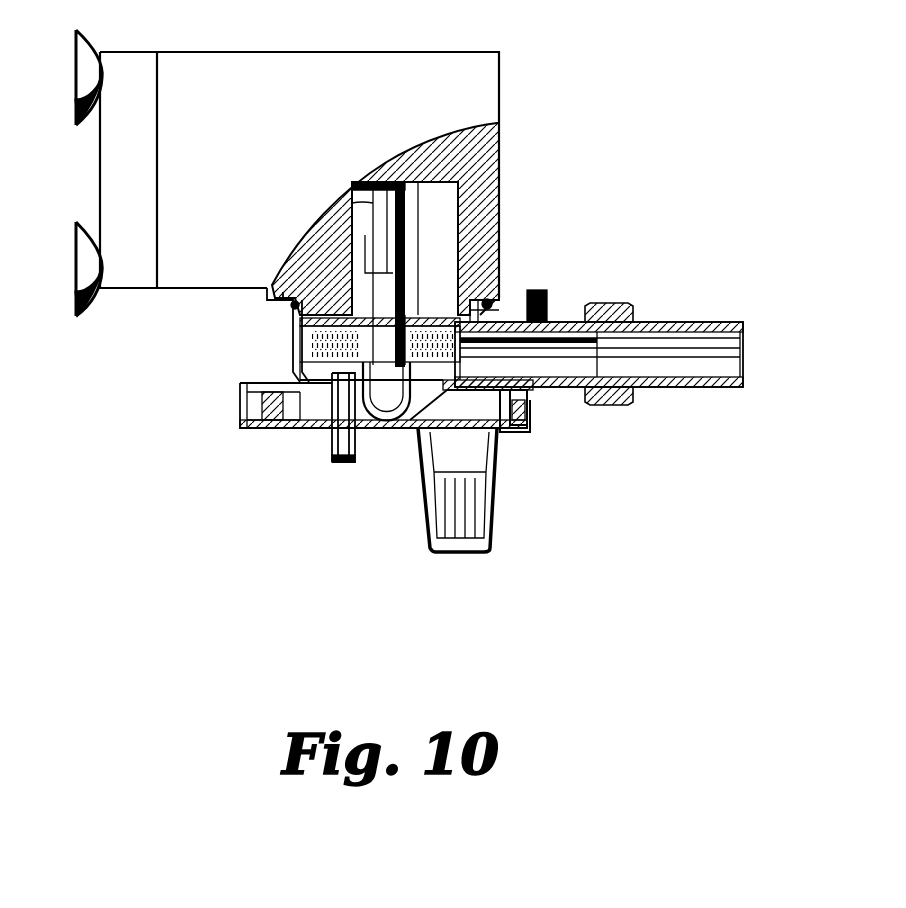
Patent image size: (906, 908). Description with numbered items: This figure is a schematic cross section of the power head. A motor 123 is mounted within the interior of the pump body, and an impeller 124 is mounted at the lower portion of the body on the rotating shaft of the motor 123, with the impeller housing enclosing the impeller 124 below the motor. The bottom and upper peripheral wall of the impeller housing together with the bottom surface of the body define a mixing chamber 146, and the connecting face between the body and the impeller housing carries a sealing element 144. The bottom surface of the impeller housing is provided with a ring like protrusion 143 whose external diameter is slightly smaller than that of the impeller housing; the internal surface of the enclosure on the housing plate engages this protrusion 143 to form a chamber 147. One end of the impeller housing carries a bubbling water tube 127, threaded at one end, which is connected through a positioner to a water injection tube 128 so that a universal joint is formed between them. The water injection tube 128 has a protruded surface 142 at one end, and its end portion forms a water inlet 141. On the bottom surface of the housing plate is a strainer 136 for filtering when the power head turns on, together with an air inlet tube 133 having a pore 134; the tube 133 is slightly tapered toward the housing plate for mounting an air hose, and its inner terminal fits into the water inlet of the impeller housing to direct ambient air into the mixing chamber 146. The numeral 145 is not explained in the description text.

The motor 123 is at (498, 172).
The bore cavity 145 is at (373, 206).
The sealing element 144 is at (482, 290).
The protruded surface 142 is at (615, 318).
The water injection tube 128 is at (697, 320).
The water inlet 141 is at (733, 372).
The impeller 124 is at (300, 342).
The mixing chamber 146 is at (292, 365).
The ring like protrusion 143 is at (250, 432).
The air inlet tube 133 is at (330, 447).
The pore 134 is at (343, 463).
The chamber 147 is at (500, 410).
The strainer 136 is at (490, 515).
The bubbling water tube 127 is at (560, 410).